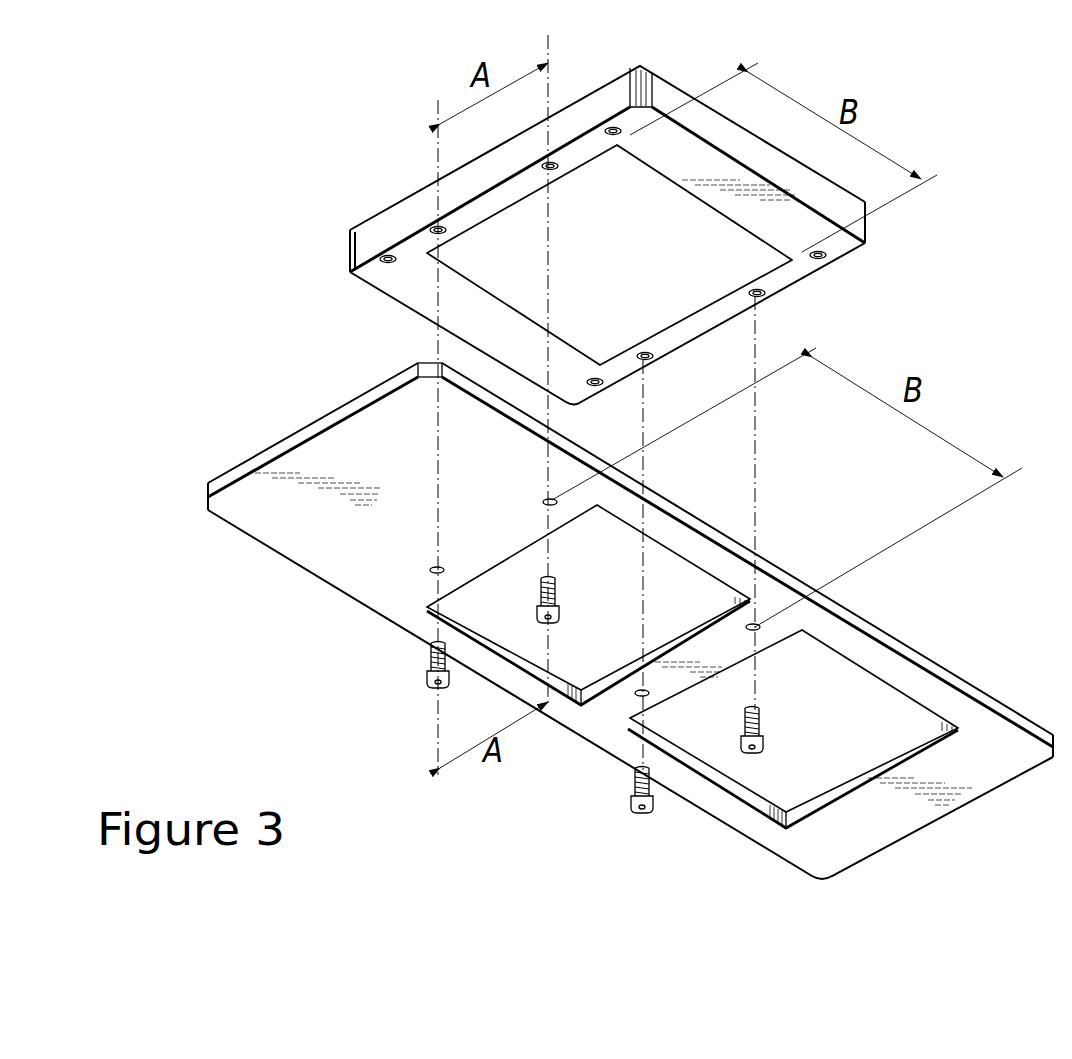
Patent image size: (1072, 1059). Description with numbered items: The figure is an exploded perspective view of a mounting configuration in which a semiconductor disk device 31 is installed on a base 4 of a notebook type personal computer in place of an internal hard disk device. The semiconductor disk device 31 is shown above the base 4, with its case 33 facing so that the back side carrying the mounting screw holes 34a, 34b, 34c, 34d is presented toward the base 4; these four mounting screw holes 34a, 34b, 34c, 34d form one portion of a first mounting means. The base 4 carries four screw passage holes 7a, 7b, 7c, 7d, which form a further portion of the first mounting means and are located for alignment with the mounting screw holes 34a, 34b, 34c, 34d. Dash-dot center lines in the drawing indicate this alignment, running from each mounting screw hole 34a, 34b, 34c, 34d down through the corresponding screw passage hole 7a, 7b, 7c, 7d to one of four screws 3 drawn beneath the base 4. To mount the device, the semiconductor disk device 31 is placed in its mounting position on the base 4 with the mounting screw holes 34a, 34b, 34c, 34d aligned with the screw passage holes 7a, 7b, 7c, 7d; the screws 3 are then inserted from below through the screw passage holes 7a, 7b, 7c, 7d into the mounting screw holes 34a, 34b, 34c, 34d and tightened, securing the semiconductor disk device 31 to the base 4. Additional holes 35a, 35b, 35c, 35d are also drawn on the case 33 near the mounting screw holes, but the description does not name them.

The screws 3 is at (558, 610).
The base 4 is at (630, 621).
The screw passage hole 7a is at (548, 506).
The screw passage hole 7b is at (434, 573).
The screw passage hole 7c is at (753, 631).
The screw passage hole 7d is at (641, 697).
The semiconductor disk device 31 is at (592, 233).
The case 33 is at (658, 93).
The mounting screw hole 34a is at (552, 170).
The mounting screw hole 34b is at (441, 233).
The mounting screw hole 34c is at (758, 296).
The mounting screw hole 34d is at (646, 360).
The mounting hole 35a is at (614, 135).
The mounting hole 35b is at (387, 263).
The mounting hole 35c is at (820, 258).
The mounting hole 35d is at (596, 386).